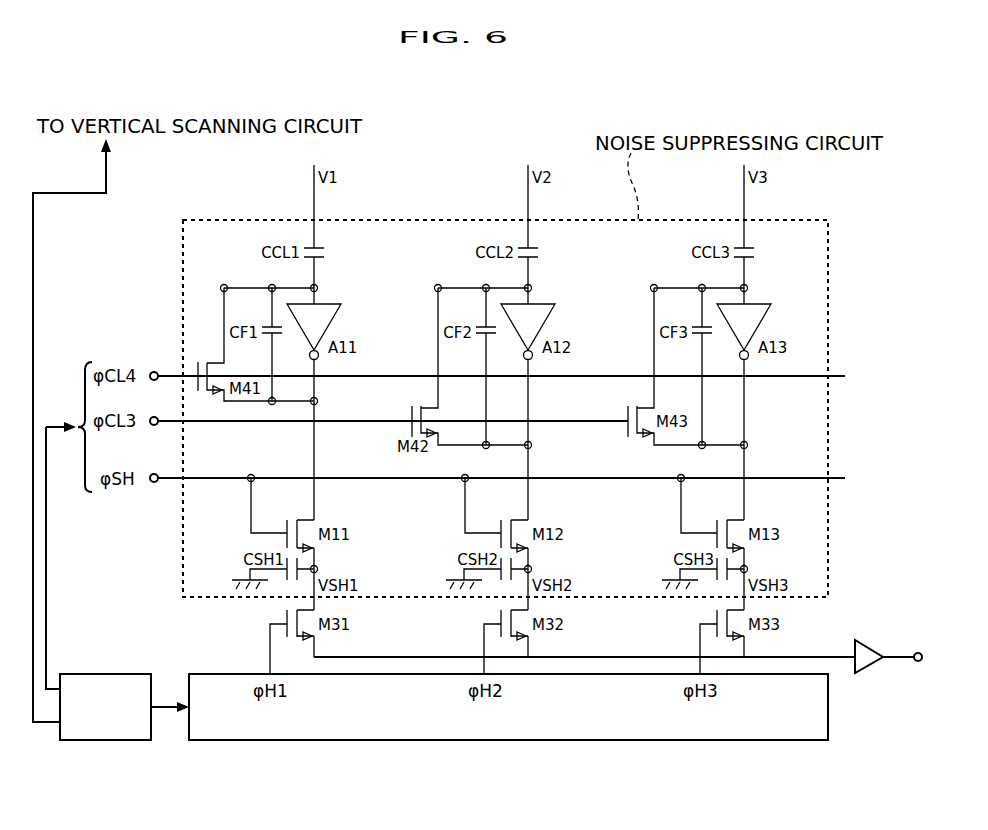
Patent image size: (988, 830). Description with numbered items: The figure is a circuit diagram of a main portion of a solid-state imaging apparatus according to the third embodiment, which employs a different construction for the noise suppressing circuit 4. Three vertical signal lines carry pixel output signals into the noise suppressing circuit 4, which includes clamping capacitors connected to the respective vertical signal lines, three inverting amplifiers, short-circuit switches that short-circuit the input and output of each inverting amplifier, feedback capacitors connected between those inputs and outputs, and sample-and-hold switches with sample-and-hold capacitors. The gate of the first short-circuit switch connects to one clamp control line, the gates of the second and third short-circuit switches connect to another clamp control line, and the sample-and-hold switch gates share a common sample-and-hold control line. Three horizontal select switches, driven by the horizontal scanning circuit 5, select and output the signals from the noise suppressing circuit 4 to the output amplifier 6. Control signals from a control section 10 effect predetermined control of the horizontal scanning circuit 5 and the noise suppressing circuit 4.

The noise suppressing circuit 4 is at (213, 220).
The horizontal scanning circuit 5 is at (280, 742).
The output amplifier 6 is at (866, 673).
The control section 10 is at (105, 742).